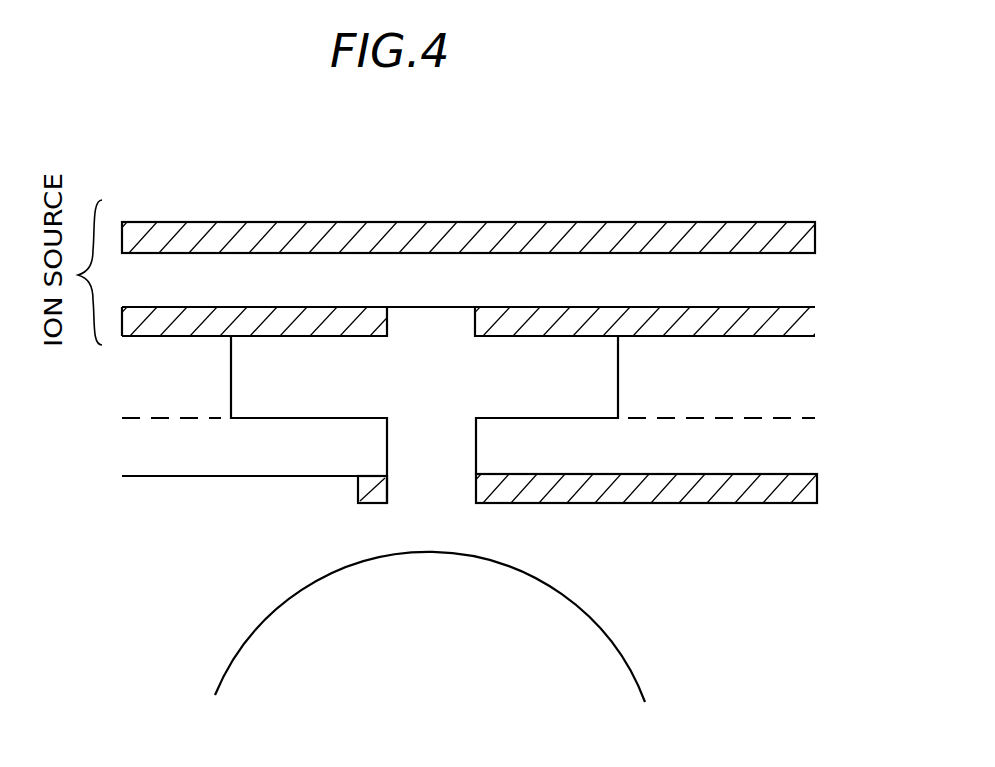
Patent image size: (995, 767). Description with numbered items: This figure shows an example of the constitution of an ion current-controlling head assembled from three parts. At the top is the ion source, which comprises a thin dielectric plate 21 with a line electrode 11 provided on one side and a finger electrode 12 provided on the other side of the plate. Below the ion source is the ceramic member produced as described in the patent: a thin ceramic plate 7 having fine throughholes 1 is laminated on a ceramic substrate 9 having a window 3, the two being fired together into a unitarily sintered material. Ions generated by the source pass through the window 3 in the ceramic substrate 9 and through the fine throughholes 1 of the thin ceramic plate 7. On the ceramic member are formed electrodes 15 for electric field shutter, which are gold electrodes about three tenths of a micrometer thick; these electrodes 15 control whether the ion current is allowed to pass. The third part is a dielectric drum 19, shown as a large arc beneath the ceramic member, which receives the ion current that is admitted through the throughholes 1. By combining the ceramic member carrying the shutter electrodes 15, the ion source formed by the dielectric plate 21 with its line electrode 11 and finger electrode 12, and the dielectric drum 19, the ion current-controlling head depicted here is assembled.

The fine throughholes 1 is at (440, 463).
The window 3 is at (478, 374).
The thin ceramic plate 7 is at (200, 448).
The ceramic substrate 9 is at (765, 382).
The line electrode 11 is at (590, 238).
The finger electrode 12 is at (788, 323).
The electrodes for electric field shutter 15 is at (672, 503).
The dielectric drum 19 is at (615, 644).
The thin dielectric plate 21 is at (788, 272).